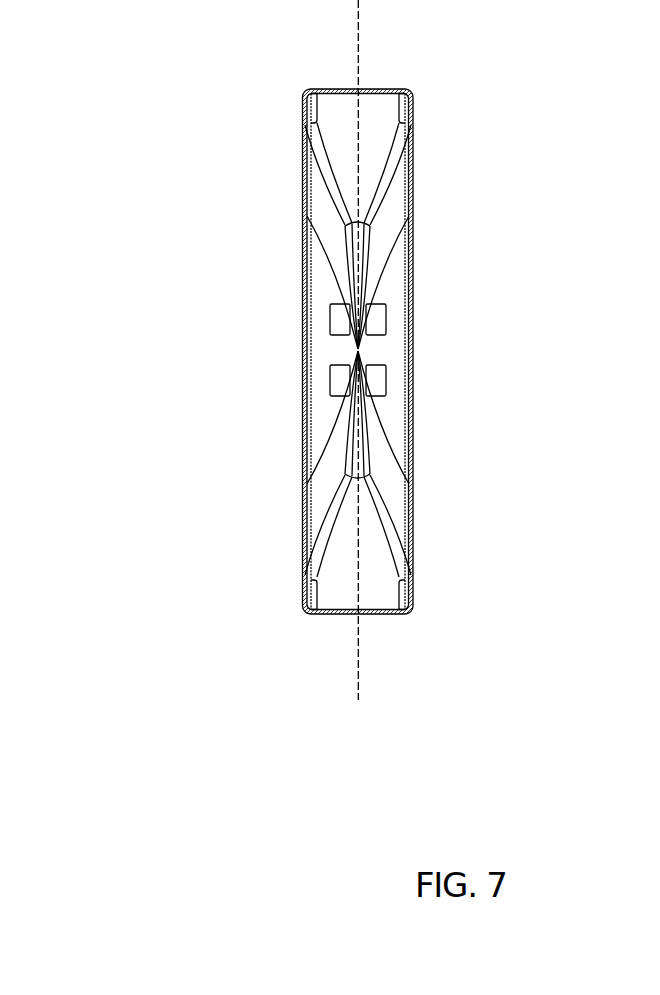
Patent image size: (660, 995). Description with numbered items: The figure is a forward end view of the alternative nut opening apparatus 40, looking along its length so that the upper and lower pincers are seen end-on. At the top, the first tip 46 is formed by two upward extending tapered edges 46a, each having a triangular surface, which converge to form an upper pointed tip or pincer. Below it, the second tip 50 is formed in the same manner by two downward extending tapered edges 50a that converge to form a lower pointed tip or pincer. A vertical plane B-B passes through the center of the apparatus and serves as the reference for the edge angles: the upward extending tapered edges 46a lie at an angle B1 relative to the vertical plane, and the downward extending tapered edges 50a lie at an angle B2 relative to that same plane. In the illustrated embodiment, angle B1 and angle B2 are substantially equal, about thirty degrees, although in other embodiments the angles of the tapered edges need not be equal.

The nut opening apparatus 40 is at (150, 142).
The first tip 46 is at (360, 350).
The upward extending tapered edges 46a is at (350, 326).
The second tip 50 is at (362, 351).
The downward extending tapered edges 50a is at (340, 377).
The vertical plane B- B is at (369, 352).
The angle β1 B1 is at (573, 208).
The angle β2 B2 is at (575, 507).